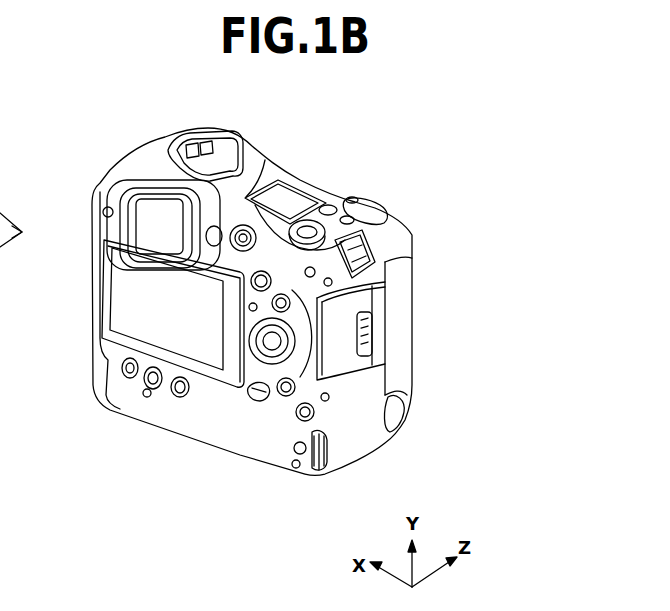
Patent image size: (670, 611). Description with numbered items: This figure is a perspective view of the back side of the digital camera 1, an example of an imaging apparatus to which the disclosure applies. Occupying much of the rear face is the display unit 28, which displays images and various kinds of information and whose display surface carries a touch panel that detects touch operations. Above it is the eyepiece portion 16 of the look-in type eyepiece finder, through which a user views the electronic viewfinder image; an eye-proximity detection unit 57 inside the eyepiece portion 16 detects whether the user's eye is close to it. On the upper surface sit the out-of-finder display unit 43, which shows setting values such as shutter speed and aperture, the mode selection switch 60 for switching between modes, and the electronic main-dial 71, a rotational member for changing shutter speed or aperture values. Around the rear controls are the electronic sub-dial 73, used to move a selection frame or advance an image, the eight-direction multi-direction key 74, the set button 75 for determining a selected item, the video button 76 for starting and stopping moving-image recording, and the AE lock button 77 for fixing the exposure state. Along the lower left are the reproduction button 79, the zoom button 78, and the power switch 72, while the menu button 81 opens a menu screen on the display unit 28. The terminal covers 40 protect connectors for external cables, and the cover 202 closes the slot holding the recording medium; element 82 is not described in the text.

The digital camera 1 is at (383, 112).
The eyepiece portion 16 is at (153, 222).
The menu button 81 is at (101, 182).
The eye-proximity detection unit 57 is at (160, 255).
The display unit 28 is at (137, 310).
The terminal covers 40 is at (26, 230).
The reproduction button 79 is at (129, 379).
The zoom button 78 is at (160, 390).
The power switch 72 is at (254, 396).
The set button 75 is at (272, 360).
The video button 76 is at (244, 224).
The multi-direction key 74 is at (265, 270).
The out-of-finder display unit 43 is at (283, 200).
The mode selection switch 60 is at (310, 228).
The button 82 is at (328, 205).
The electronic main-dial 71 is at (348, 216).
The electronic sub-dial 73 is at (388, 238).
The AE lock button 77 is at (387, 304).
The cover 202 is at (345, 368).